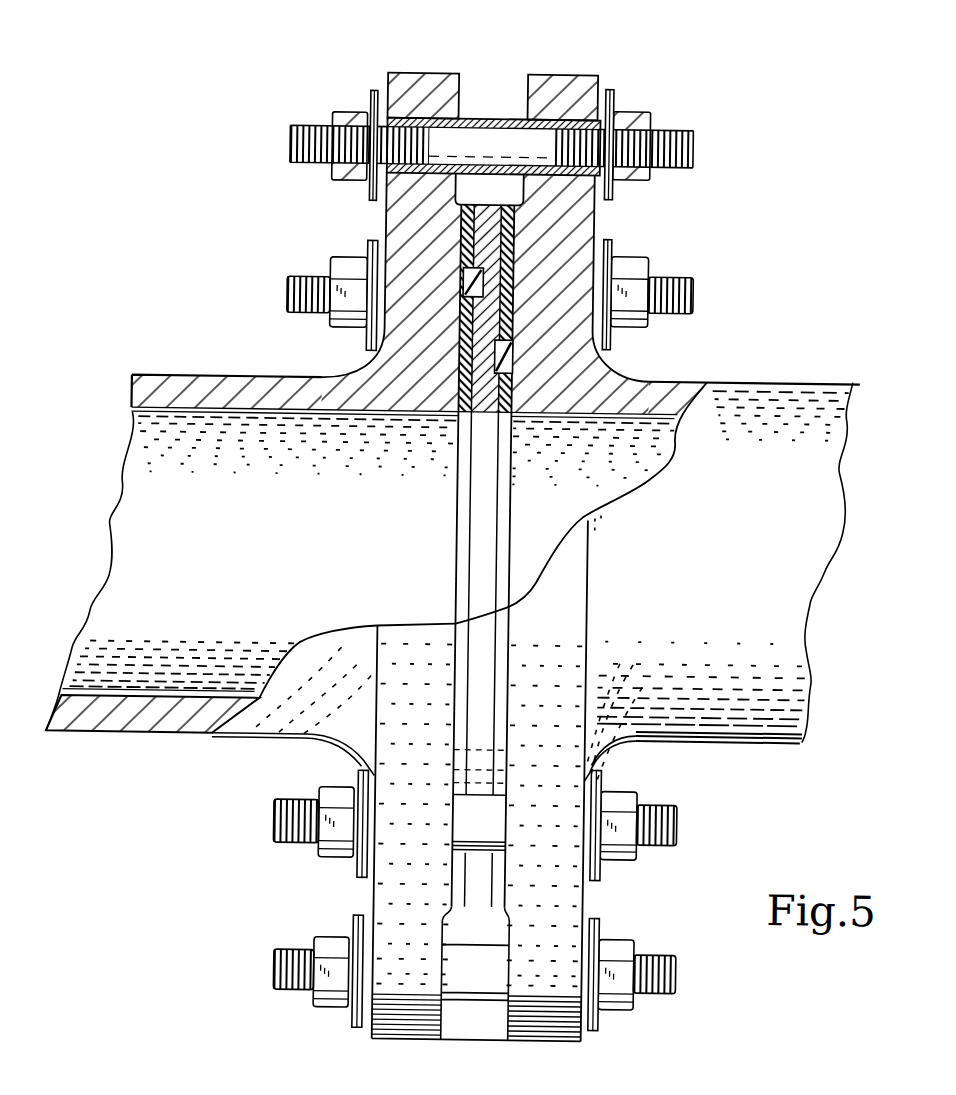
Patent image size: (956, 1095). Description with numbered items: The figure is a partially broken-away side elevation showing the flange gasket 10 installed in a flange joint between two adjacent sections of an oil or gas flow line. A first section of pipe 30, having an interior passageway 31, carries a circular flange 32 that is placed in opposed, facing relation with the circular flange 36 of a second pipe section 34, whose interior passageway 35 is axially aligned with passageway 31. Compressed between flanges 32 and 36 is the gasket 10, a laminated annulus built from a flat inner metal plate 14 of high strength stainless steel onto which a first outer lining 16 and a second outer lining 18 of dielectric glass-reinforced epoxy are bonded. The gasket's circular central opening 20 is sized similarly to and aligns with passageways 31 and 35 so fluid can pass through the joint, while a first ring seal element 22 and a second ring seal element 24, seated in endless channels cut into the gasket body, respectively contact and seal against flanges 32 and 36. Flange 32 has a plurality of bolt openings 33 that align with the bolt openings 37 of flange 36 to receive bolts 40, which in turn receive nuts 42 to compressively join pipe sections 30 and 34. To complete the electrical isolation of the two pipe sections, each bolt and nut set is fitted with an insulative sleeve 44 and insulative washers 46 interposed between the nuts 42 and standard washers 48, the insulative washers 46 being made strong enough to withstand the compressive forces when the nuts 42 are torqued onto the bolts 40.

The gasket 10 is at (477, 713).
The inner metal plate 14 is at (482, 667).
The first outer lining 16 is at (458, 667).
The second outer lining 18 is at (514, 630).
The central opening 20 is at (452, 514).
The first ring seal element 22 is at (464, 277).
The second ring seal element 24 is at (515, 371).
The first section of pipe 30 is at (219, 381).
The interior passageway 31 is at (159, 492).
The circular flange 32 is at (384, 212).
The bolt openings 33 is at (424, 73).
The second pipe section 34 is at (746, 379).
The interior passageway 35 is at (652, 441).
The circular flange 36 is at (594, 229).
The bolt openings 37 is at (557, 74).
The bolts 40 is at (691, 138).
The nuts 42 is at (345, 112).
The insulative sleeve 44 is at (475, 117).
The insulative washers 46 is at (378, 94).
The standard washers 48 is at (369, 191).